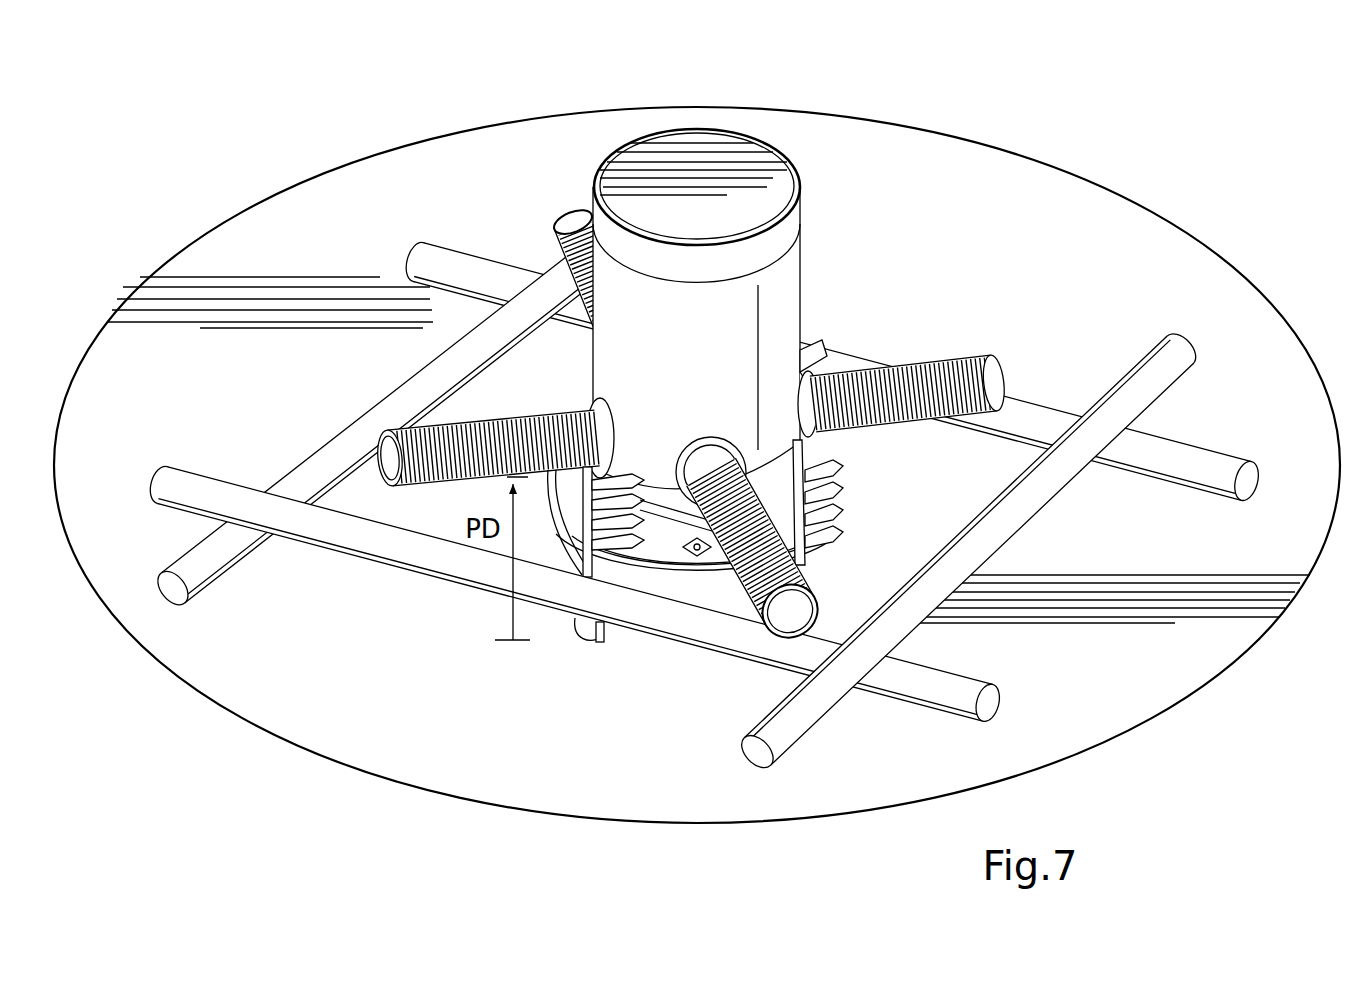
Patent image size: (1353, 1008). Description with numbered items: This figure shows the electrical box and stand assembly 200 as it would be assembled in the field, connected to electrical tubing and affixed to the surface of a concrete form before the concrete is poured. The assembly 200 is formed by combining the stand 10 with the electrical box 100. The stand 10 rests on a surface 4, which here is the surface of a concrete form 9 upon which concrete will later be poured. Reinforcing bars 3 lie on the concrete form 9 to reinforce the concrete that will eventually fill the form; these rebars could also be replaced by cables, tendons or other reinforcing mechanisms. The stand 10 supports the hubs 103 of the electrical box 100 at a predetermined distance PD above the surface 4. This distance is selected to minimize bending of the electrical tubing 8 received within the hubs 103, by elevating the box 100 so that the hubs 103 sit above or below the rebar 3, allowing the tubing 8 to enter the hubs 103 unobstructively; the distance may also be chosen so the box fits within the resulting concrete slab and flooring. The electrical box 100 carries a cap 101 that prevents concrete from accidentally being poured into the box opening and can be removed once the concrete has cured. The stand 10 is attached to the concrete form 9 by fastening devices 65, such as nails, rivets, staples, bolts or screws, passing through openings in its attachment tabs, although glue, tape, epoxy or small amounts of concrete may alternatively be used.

The surface 4 is at (435, 167).
The concrete form 9 is at (1073, 667).
The reinforcing bars 3 is at (1150, 333).
The electrical tubing 8 is at (553, 222).
The electrical box 100 is at (825, 245).
The cap 101 is at (770, 125).
The hubs 103 is at (825, 355).
The stand 10 is at (680, 587).
The fastening devices 65 is at (565, 622).
The electrical box and stand assembly 200 is at (1005, 215).